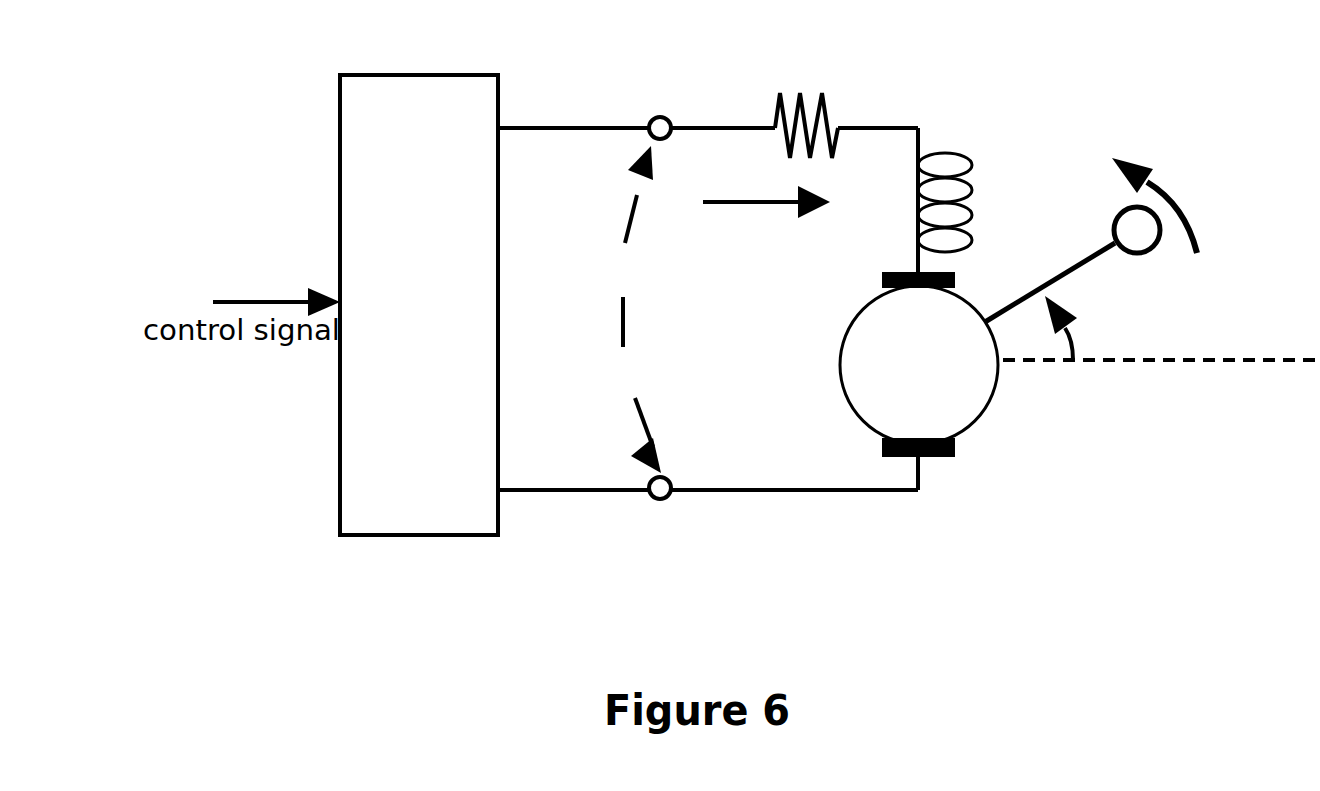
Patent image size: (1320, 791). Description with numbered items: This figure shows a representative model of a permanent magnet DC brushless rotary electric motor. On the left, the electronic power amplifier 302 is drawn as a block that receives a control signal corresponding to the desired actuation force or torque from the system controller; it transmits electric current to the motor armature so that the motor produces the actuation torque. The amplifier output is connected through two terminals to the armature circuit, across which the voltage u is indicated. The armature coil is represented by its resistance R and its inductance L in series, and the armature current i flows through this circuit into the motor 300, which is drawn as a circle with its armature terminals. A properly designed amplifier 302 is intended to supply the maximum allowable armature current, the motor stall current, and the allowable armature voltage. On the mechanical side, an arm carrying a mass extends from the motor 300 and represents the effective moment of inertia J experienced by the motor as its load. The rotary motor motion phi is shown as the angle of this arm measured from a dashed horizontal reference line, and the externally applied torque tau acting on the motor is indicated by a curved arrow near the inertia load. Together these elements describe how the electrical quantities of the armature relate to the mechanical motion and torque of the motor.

The electronic power amplifier 302 is at (340, 212).
The motor 300 is at (992, 402).
The resistance of armature coil R is at (806, 104).
The inductance of armature coil L is at (957, 202).
The armature current i is at (766, 195).
The voltage across the armature coil u is at (645, 309).
The effective moment of inertia J is at (1072, 264).
The motor motion phi is at (1085, 327).
The externally applied torque tau is at (1178, 189).